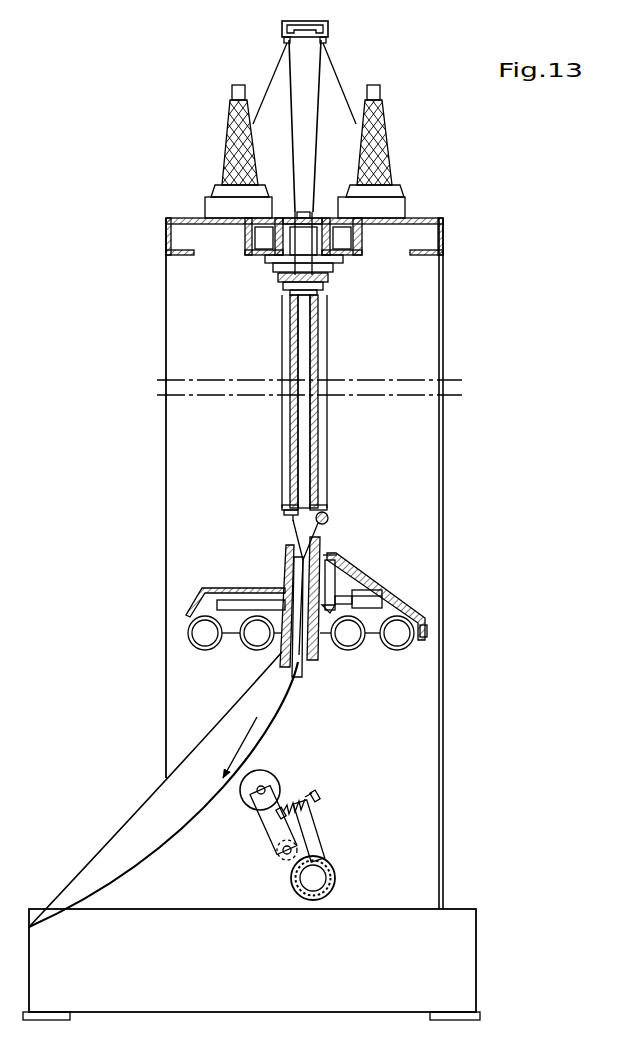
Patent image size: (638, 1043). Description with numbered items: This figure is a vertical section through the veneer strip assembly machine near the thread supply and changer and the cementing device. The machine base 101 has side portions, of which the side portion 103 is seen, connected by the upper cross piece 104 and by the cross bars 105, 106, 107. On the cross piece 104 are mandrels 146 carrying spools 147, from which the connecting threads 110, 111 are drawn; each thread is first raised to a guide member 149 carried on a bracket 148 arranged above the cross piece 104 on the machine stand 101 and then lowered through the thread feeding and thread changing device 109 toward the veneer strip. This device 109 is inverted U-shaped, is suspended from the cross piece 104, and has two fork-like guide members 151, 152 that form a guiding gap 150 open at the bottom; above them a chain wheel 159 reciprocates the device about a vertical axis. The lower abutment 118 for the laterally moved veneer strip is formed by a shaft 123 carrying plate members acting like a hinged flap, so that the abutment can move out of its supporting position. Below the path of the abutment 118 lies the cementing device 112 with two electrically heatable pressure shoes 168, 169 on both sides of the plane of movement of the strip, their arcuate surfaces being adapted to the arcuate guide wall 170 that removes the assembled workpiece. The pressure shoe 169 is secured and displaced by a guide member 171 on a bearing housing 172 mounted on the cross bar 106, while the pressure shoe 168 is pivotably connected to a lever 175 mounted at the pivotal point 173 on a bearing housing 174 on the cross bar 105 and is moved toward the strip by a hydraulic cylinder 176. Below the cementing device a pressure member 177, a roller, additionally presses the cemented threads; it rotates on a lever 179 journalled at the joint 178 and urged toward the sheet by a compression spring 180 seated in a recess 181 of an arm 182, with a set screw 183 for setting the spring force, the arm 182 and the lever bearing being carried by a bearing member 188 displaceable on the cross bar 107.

The machine base 101 is at (460, 977).
The side portion 103 is at (446, 425).
The upper cross piece 104 is at (446, 238).
The cross bar 105 is at (384, 650).
The cross bar 106 is at (252, 648).
The cross bar 107 is at (335, 870).
The thread feeding and thread changing device 109 is at (334, 314).
The connecting thread 110 is at (291, 85).
The connecting thread 111 is at (320, 85).
The cementing device 112 is at (306, 610).
The abutment 118 is at (289, 510).
The shaft 123 is at (325, 512).
The mandrel 146 is at (234, 93).
The spool 147 is at (228, 128).
The thread guide bracket 148 is at (324, 22).
The guide member 149 is at (283, 41).
The guiding gap 150 is at (303, 323).
The guide member 151 is at (294, 355).
The guide member 152 is at (316, 355).
The chain wheel 159 is at (328, 277).
The pressure shoe 168 is at (322, 545).
The pressure shoe 169 is at (287, 565).
The guide wall 170 is at (173, 857).
The guide member 171 is at (228, 606).
The bearing housing 172 is at (190, 608).
The pivotal point 173 is at (343, 563).
The bearing housing 174 is at (427, 630).
The lever 175 is at (337, 583).
The hydraulic cylinder 176 is at (385, 600).
The pressure member 177 is at (273, 775).
The joint 178 is at (283, 853).
The lever 179 is at (268, 825).
The compression spring 180 is at (287, 797).
The recess 181 is at (320, 808).
The arm 182 is at (322, 835).
The set screw 183 is at (318, 795).
The bearing member 188 is at (334, 886).